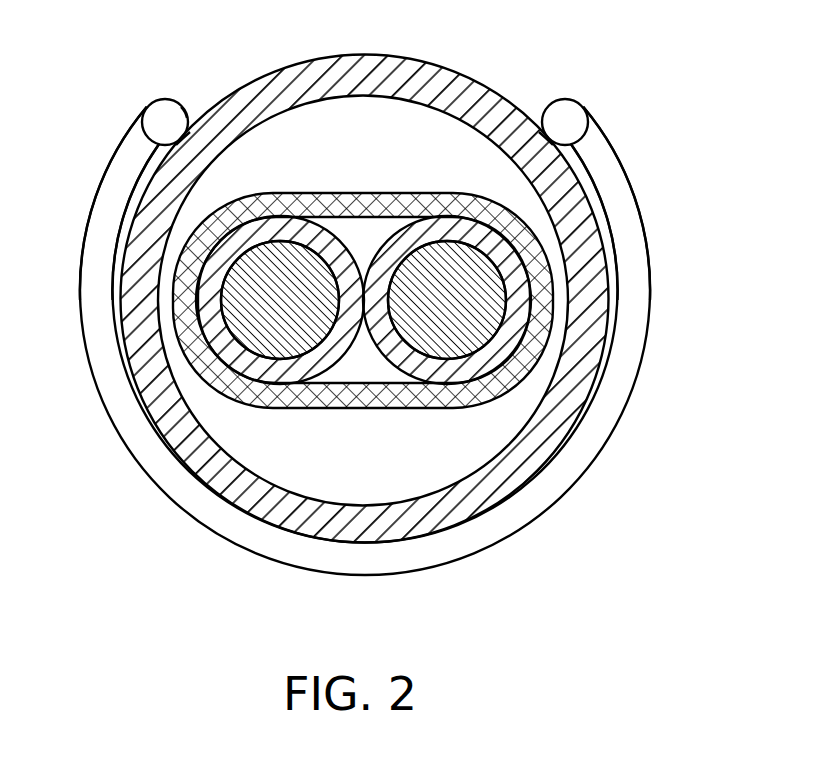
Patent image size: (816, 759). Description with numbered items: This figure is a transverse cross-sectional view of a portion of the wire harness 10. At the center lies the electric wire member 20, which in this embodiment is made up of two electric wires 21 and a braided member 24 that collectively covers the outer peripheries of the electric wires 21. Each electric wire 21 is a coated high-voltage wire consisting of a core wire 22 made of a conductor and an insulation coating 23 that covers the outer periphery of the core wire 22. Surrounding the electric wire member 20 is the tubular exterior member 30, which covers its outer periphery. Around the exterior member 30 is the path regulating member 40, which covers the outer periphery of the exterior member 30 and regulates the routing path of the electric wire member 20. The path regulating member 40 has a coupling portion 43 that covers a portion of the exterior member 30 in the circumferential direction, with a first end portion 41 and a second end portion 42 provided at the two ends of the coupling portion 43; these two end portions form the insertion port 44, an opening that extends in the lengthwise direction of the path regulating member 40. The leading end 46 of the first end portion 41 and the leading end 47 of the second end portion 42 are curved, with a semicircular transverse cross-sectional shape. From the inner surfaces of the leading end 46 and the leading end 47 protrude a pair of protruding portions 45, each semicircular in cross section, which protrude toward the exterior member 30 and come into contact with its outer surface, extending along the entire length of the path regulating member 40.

The wire harness 10 is at (636, 81).
The electric wire member 20 is at (366, 412).
The electric wire 21 is at (388, 248).
The core wire 22 is at (284, 256).
The insulation coating 23 is at (331, 242).
The braided member 24 is at (449, 198).
The exterior member 30 is at (486, 87).
The path regulating member 40 is at (641, 214).
The first end portion 41 is at (608, 142).
The second end portion 42 is at (124, 137).
The coupling portion 43 is at (467, 551).
The insertion port 44 is at (172, 99).
The protruding portion 45 is at (175, 136).
The leading end of the first end portion 46 is at (554, 99).
The leading end of the second end portion 47 is at (183, 103).